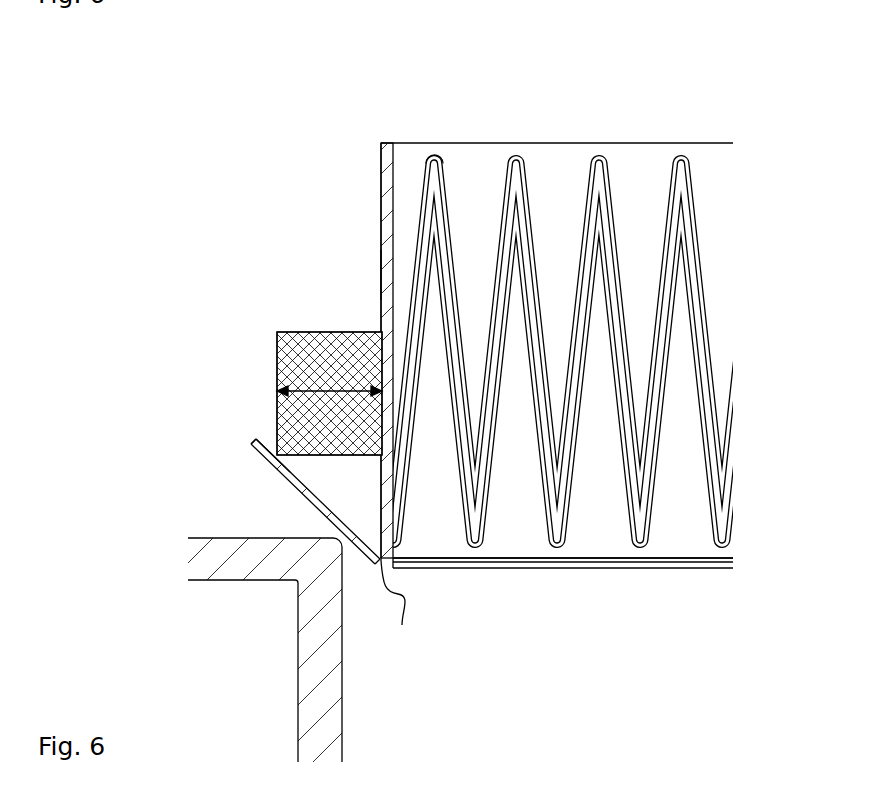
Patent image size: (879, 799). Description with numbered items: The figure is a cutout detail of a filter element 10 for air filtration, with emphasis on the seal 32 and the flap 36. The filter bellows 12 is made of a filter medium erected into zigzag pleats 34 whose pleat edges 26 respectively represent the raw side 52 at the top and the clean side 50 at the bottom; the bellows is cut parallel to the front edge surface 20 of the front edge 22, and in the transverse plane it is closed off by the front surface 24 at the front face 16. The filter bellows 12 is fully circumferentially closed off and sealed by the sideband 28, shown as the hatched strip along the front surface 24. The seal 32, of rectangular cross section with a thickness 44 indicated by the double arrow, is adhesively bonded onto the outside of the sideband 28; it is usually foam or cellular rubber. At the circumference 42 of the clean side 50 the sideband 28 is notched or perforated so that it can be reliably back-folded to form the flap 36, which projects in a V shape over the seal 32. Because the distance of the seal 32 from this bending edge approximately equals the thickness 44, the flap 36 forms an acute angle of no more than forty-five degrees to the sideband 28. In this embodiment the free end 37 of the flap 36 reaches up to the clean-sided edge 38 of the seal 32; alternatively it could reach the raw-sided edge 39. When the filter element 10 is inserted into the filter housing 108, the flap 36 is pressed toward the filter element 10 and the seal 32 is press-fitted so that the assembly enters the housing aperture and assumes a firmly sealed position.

The filter element 10 is at (631, 130).
The filter bellows 12 is at (585, 143).
The front face 16 is at (366, 213).
The front edge surface 20 is at (622, 515).
The front edge 22 is at (543, 515).
The front surface 24 is at (379, 162).
The pleat edge 26 is at (437, 156).
The sideband 28 is at (379, 272).
The seal 32 is at (277, 362).
The pleat 34 is at (529, 218).
The flap 36 is at (280, 474).
The free end 37 is at (252, 442).
The clean-sided edge 38 is at (279, 446).
The raw-sided edge 39 is at (277, 332).
The circumference 42 is at (398, 610).
The thickness 44 is at (336, 390).
The clean side 50 is at (633, 584).
The raw side 52 is at (500, 117).
The filter housing 108 is at (343, 698).